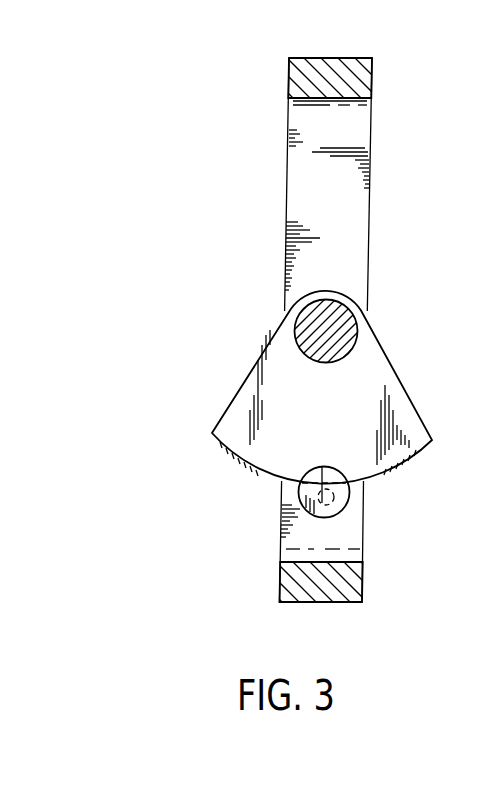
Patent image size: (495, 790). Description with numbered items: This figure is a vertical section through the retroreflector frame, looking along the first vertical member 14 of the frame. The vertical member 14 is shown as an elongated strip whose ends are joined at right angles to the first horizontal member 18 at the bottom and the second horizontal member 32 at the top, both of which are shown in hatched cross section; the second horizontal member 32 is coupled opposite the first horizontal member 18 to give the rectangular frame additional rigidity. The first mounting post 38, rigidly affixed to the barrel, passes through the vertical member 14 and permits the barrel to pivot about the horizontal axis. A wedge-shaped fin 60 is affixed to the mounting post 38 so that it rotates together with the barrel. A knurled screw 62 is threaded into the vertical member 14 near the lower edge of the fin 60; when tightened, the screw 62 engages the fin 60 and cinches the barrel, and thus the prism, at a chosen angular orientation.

The first vertical member 14 is at (335, 207).
The second horizontal member 32 is at (347, 75).
The first horizontal member 18 is at (328, 582).
The first mounting post 38 is at (335, 316).
The wedge-shaped fin 60 is at (393, 408).
The knurled screw 62 is at (340, 494).